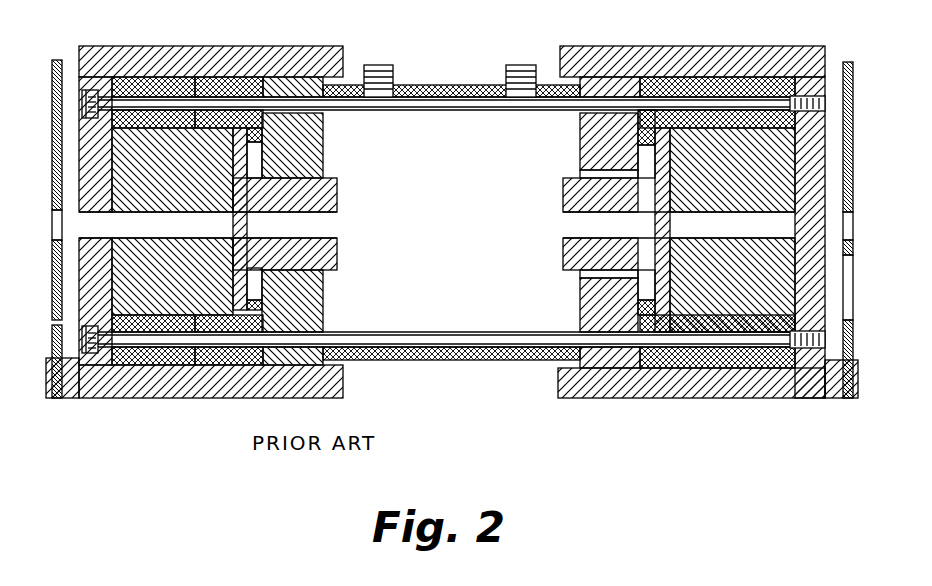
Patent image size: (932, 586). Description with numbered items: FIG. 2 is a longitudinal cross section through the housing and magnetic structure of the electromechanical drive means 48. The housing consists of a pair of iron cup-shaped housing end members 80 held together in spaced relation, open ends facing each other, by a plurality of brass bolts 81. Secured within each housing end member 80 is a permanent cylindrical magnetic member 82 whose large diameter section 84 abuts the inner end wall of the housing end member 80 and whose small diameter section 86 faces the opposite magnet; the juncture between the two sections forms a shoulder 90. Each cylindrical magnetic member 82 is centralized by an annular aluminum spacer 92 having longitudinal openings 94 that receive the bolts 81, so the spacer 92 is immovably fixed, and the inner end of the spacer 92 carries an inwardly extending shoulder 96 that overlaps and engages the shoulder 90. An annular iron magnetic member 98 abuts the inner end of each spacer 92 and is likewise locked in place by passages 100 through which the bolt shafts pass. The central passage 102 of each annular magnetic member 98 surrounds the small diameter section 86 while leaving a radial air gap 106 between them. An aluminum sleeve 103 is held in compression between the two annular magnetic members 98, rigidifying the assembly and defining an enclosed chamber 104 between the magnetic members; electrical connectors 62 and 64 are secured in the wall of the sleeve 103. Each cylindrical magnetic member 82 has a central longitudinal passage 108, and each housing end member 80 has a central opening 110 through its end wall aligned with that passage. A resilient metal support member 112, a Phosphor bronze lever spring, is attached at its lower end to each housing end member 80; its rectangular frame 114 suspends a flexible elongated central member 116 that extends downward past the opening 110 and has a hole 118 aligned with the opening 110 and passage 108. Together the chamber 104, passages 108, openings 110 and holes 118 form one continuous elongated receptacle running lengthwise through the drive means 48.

The electromechanical drive means 48 is at (644, 46).
The electrical connector 62 is at (377, 66).
The electrical connector 64 is at (513, 66).
The housing end member 80 is at (213, 52).
The brass bolt 81 is at (165, 100).
The cylindrical magnetic member 82 is at (665, 128).
The large diameter section 84 is at (790, 290).
The small diameter section 86 is at (565, 260).
The shoulder 90 is at (618, 222).
The annular aluminum spacer 92 is at (785, 90).
The longitudinal opening 94 is at (715, 350).
The inwardly extending shoulder 96 is at (600, 172).
The annular iron magnetic member 98 is at (325, 140).
The passage 100 is at (602, 92).
The central passage 102 is at (580, 282).
The aluminum sleeve 103 is at (436, 86).
The enclosed chamber 104 is at (447, 224).
The radial air gap 106 is at (300, 176).
The central longitudinal passage 108 is at (732, 230).
The central opening 110 is at (822, 201).
The resilient metal support member 112 is at (52, 62).
The rectangular frame 114 is at (855, 82).
The flexible elongated central member 116 is at (853, 155).
The hole 118 is at (52, 232).